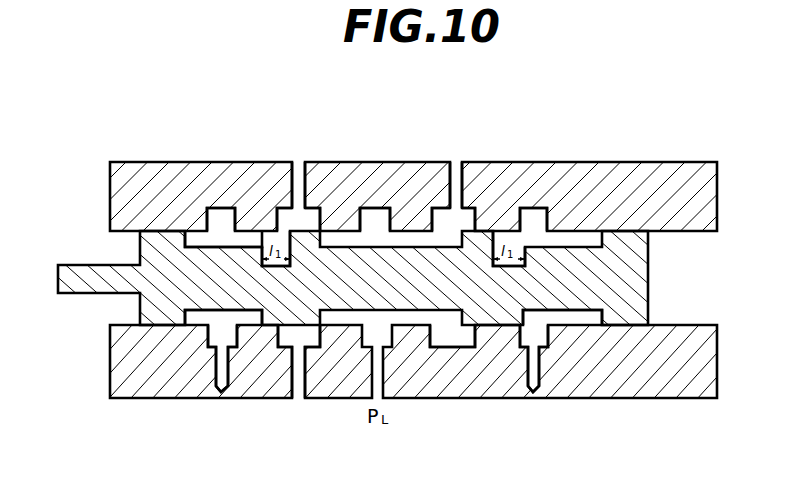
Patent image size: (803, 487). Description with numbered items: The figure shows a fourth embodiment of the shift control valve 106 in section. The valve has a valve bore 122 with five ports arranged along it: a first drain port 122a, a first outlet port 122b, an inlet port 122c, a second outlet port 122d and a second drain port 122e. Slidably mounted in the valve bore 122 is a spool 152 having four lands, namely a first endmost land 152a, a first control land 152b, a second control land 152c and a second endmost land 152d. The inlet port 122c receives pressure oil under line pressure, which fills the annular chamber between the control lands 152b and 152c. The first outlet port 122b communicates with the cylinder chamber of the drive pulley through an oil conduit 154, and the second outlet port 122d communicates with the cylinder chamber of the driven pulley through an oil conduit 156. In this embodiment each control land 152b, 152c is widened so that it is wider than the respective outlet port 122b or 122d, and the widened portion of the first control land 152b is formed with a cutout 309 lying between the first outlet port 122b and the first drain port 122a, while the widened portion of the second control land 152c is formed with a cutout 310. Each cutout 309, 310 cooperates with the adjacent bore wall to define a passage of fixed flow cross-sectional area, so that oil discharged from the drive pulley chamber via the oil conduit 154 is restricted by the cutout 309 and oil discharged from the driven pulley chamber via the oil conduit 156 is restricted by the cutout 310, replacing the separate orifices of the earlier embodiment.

The shift control valve 106 is at (545, 161).
The valve bore 122 is at (200, 230).
The first drain port 122a is at (225, 208).
The first outlet port 122b is at (280, 208).
The inlet port 122c is at (378, 208).
The second outlet port 122d is at (477, 227).
The second drain port 122e is at (538, 209).
The oil conduit 154 is at (303, 182).
The oil conduit 156 is at (453, 177).
The cutout 309 is at (266, 231).
The cutout 310 is at (507, 230).
The spool 152 is at (205, 298).
The first endmost land 152a is at (165, 307).
The first control land 152b is at (303, 317).
The second control land 152c is at (473, 308).
The second endmost land 152d is at (628, 308).